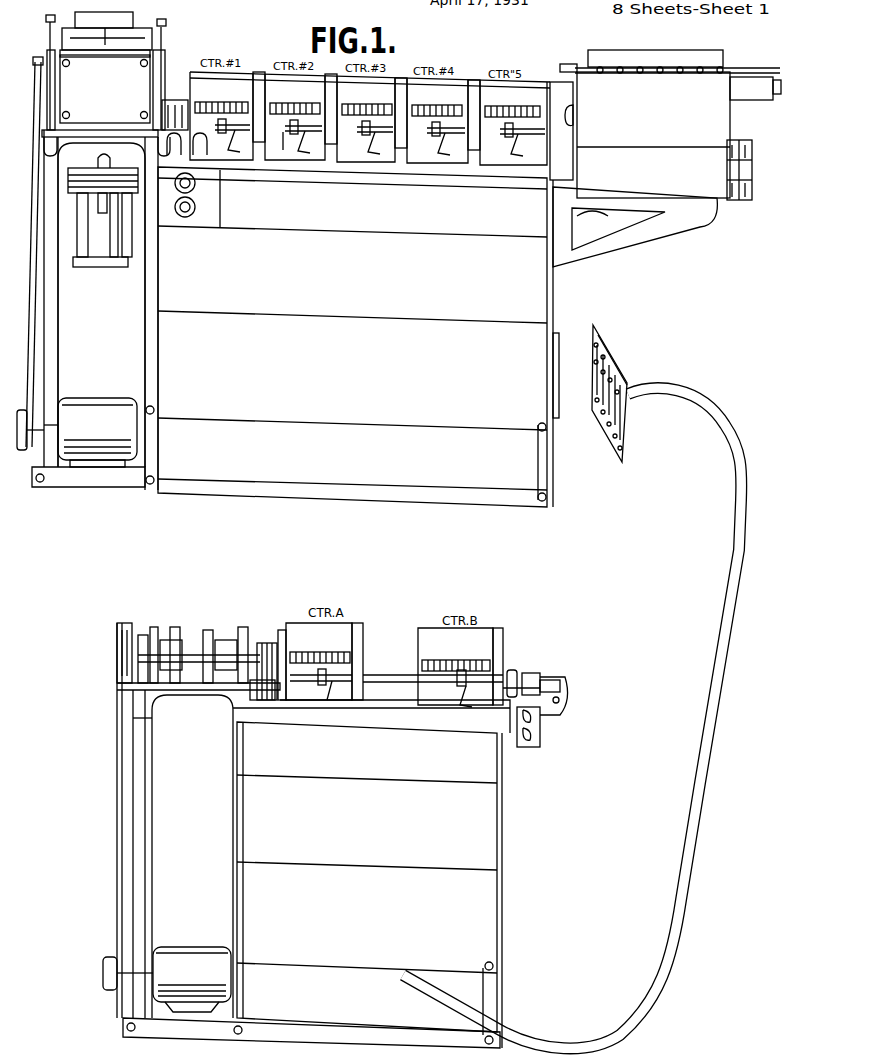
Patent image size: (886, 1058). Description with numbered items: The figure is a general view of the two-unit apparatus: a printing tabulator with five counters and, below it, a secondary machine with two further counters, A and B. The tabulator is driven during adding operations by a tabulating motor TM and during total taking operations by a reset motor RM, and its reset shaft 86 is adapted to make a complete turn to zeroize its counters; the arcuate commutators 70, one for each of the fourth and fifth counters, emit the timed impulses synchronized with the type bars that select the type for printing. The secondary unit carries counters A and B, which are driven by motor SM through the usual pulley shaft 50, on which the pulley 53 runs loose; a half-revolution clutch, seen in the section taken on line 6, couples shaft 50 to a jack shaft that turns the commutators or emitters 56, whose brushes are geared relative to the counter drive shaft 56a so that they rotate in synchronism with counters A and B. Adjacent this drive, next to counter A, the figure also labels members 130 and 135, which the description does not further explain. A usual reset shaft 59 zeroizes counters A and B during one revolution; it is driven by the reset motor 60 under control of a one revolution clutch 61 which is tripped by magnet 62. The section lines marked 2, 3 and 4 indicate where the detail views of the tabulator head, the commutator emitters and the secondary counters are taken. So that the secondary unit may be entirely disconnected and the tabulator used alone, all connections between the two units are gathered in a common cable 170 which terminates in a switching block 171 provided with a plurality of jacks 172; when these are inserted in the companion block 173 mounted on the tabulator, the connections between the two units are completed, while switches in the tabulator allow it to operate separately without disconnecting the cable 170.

The pulley shaft 50 is at (201, 655).
The pulley 53 is at (115, 665).
The commutators or emitters 56 is at (175, 632).
The counter drive shaft 56a is at (270, 690).
The reset shaft 59 is at (400, 676).
The reset motor 60 is at (552, 728).
The one revolution clutch 61 is at (524, 684).
The magnet 62 is at (529, 750).
The arcuate commutators 70 is at (730, 150).
The reset shaft of the tabulator 86 is at (283, 150).
The clutch 130 is at (284, 632).
The clutch member 135 is at (268, 645).
The common cable 170 is at (690, 400).
The switching block 171 is at (618, 368).
The jacks 172 is at (595, 402).
The companion block 173 is at (562, 336).
The tabulating motor TM is at (94, 398).
The motor SM is at (182, 955).
The reset motor RM is at (635, 227).
The section line 2 is at (688, 33).
The section line 3 is at (790, 125).
The section line 4 is at (488, 603).
The section line 6 is at (220, 608).